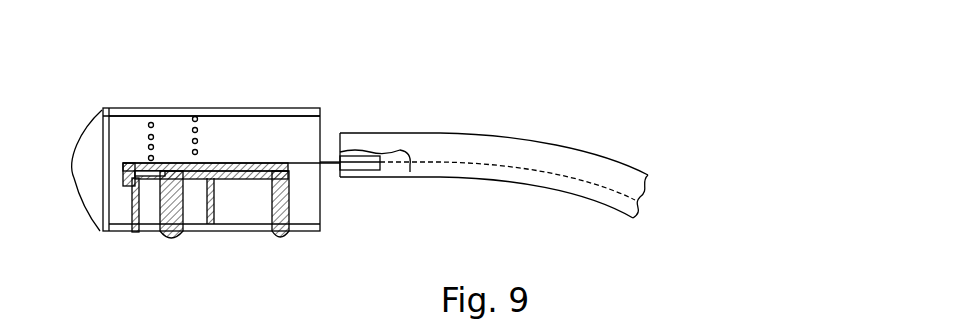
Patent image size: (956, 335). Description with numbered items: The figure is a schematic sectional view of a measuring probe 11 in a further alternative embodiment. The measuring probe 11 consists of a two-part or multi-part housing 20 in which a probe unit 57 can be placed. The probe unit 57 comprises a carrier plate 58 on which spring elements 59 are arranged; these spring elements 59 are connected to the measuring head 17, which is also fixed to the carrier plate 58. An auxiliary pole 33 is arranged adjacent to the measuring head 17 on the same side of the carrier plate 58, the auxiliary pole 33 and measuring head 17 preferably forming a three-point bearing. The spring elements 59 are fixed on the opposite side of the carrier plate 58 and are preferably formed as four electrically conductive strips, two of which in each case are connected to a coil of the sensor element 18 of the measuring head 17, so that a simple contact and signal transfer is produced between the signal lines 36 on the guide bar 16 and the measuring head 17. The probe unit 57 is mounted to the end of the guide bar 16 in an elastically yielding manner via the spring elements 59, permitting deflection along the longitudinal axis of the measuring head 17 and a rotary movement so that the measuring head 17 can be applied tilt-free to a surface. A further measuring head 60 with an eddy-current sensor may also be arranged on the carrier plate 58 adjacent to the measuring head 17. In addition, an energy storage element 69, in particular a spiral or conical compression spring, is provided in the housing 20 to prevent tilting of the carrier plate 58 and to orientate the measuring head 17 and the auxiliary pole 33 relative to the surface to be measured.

The measuring probe 11 is at (428, 87).
The guide bar 16 is at (549, 135).
The measuring head 17 is at (172, 245).
The sensor element 18 is at (145, 240).
The housing 20 is at (237, 96).
The auxiliary pole 33 is at (288, 233).
The signal lines 36 is at (446, 165).
The probe unit 57 is at (222, 140).
The carrier plate 58 is at (123, 166).
The spring elements 59 is at (276, 162).
The further measuring head 60 is at (360, 165).
The energy storage element 69 is at (146, 133).